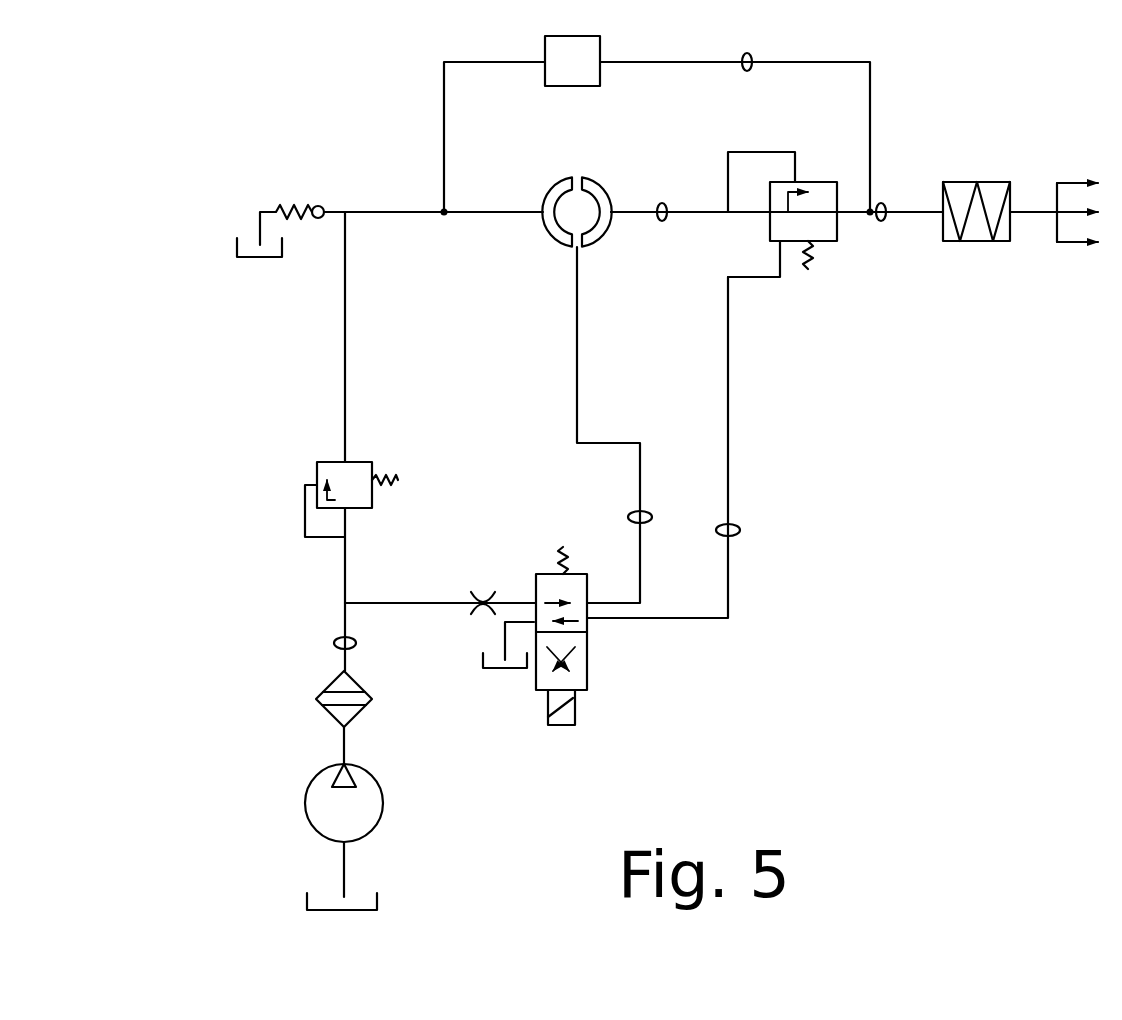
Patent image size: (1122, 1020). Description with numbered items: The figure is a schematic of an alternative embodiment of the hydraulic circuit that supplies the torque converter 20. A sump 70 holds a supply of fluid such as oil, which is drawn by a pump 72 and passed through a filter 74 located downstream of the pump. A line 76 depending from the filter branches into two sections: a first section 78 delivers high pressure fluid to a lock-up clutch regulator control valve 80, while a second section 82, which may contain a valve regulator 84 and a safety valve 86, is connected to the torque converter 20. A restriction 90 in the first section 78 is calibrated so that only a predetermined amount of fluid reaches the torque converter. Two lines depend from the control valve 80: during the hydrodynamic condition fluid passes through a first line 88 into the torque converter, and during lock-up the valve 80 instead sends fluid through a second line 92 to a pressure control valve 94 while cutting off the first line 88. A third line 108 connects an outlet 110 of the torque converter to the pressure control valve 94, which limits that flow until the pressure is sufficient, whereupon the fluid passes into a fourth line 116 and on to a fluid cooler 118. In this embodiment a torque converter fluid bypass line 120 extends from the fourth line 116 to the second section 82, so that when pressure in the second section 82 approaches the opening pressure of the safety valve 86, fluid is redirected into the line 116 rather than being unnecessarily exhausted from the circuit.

The torque converter 20 is at (545, 187).
The sump 70 is at (295, 907).
The pump 72 is at (295, 803).
The filter 74 is at (313, 688).
The line 76 is at (335, 643).
The first section 78 is at (435, 600).
The lock-up clutch regulator control valve 80 is at (595, 678).
The second section 82 is at (332, 342).
The valve regulator 84 is at (308, 463).
The safety valve 86 is at (238, 210).
The first line 88 is at (630, 517).
The restriction 90 is at (470, 617).
The second line 92 is at (740, 530).
The pressure control valve 94 is at (823, 173).
The third line 108 is at (662, 222).
The outlet 110 is at (620, 204).
The fourth line 116 is at (881, 222).
The fluid cooler 118 is at (985, 166).
The torque converter fluid bypass line 120 is at (750, 54).